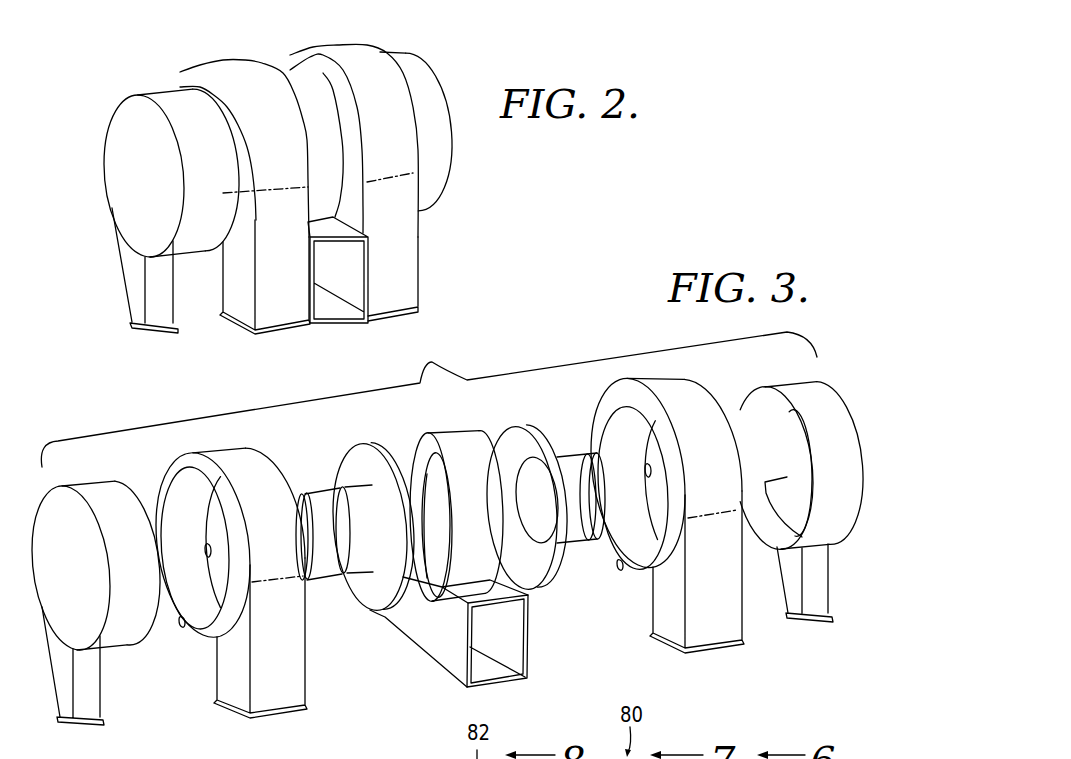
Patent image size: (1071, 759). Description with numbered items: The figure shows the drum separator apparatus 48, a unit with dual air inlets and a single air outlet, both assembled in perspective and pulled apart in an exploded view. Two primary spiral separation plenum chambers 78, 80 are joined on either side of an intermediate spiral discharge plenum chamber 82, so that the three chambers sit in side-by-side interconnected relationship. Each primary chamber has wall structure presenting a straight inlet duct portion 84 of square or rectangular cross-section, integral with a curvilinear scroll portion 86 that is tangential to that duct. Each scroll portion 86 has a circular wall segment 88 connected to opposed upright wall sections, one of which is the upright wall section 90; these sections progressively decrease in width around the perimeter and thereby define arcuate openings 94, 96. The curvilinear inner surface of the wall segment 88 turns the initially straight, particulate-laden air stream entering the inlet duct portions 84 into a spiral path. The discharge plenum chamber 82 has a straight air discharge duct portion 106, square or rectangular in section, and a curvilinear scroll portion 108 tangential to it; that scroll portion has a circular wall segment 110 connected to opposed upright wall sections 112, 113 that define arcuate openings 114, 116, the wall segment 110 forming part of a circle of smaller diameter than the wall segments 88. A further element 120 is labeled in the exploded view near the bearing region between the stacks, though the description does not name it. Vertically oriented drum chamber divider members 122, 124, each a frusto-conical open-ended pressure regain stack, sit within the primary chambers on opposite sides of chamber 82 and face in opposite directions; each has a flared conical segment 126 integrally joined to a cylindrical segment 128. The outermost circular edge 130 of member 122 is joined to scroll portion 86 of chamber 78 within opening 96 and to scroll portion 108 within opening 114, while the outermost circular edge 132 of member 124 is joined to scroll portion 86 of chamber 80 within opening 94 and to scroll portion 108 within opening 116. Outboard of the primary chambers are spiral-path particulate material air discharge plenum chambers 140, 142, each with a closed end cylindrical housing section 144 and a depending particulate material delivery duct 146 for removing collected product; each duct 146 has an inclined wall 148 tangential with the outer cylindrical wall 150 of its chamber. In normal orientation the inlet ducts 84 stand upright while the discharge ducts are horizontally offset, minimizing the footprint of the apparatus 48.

In FIG. 2, the separator apparatus 48 is at (455, 76).
In FIG. 2, the primary spiral separation plenum chamber 78 is at (165, 69).
In FIG. 3, the primary spiral separation plenum chamber 78 is at (227, 436).
In FIG. 2, the primary spiral separation plenum chamber 80 is at (338, 36).
In FIG. 3, the primary spiral separation plenum chamber 80 is at (641, 370).
In FIG. 2, the intermediate spiral discharge plenum chamber 82 is at (278, 64).
In FIG. 3, the intermediate spiral discharge plenum chamber 82 is at (462, 414).
In FIG. 2, the inlet duct portion 84 is at (228, 290).
In FIG. 3, the inlet duct portion 84 is at (295, 688).
In FIG. 2, the curvilinear scroll portion 86 is at (230, 68).
In FIG. 3, the curvilinear scroll portion 86 is at (217, 457).
In FIG. 3, the circular wall segment 88 is at (263, 460).
In FIG. 3, the upright wall section 90 is at (202, 472).
In FIG. 3, the arcuate opening 94 is at (182, 628).
In FIG. 3, the arcuate opening 96 is at (212, 550).
In FIG. 2, the air discharge duct portion 106 is at (335, 310).
In FIG. 3, the air discharge duct portion 106 is at (518, 650).
In FIG. 3, the curvilinear scroll portion 108 is at (392, 630).
In FIG. 3, the circular wall segment 110 is at (437, 440).
In FIG. 3, the upright wall section 112 is at (390, 613).
In FIG. 3, the upright wall section 113 is at (427, 557).
In FIG. 3, the arcuate opening 114 is at (423, 597).
In FIG. 3, the arcuate opening 116 is at (427, 503).
In FIG. 3, the spacer 120 is at (402, 458).
In FIG. 3, the drum chamber divider member 122 is at (369, 428).
In FIG. 3, the drum chamber divider member 124 is at (533, 416).
In FIG. 3, the flared conical segment 126 is at (363, 583).
In FIG. 3, the cylindrical segment 128 is at (325, 493).
In FIG. 3, the outermost circular edge 130 is at (345, 450).
In FIG. 3, the outermost circular edge 132 is at (503, 430).
In FIG. 2, the particulate material air discharge plenum chamber 140 is at (110, 104).
In FIG. 3, the particulate material air discharge plenum chamber 140 is at (75, 472).
In FIG. 2, the particulate material air discharge plenum chamber 142 is at (464, 150).
In FIG. 3, the particulate material air discharge plenum chamber 142 is at (827, 366).
In FIG. 2, the closed end cylindrical housing section 144 is at (113, 138).
In FIG. 3, the closed end cylindrical housing section 144 is at (847, 423).
In FIG. 2, the particulate material delivery duct 146 is at (133, 285).
In FIG. 3, the particulate material delivery duct 146 is at (98, 705).
In FIG. 3, the inclined wall 148 is at (50, 685).
In FIG. 3, the outer cylindrical wall 150 is at (125, 638).